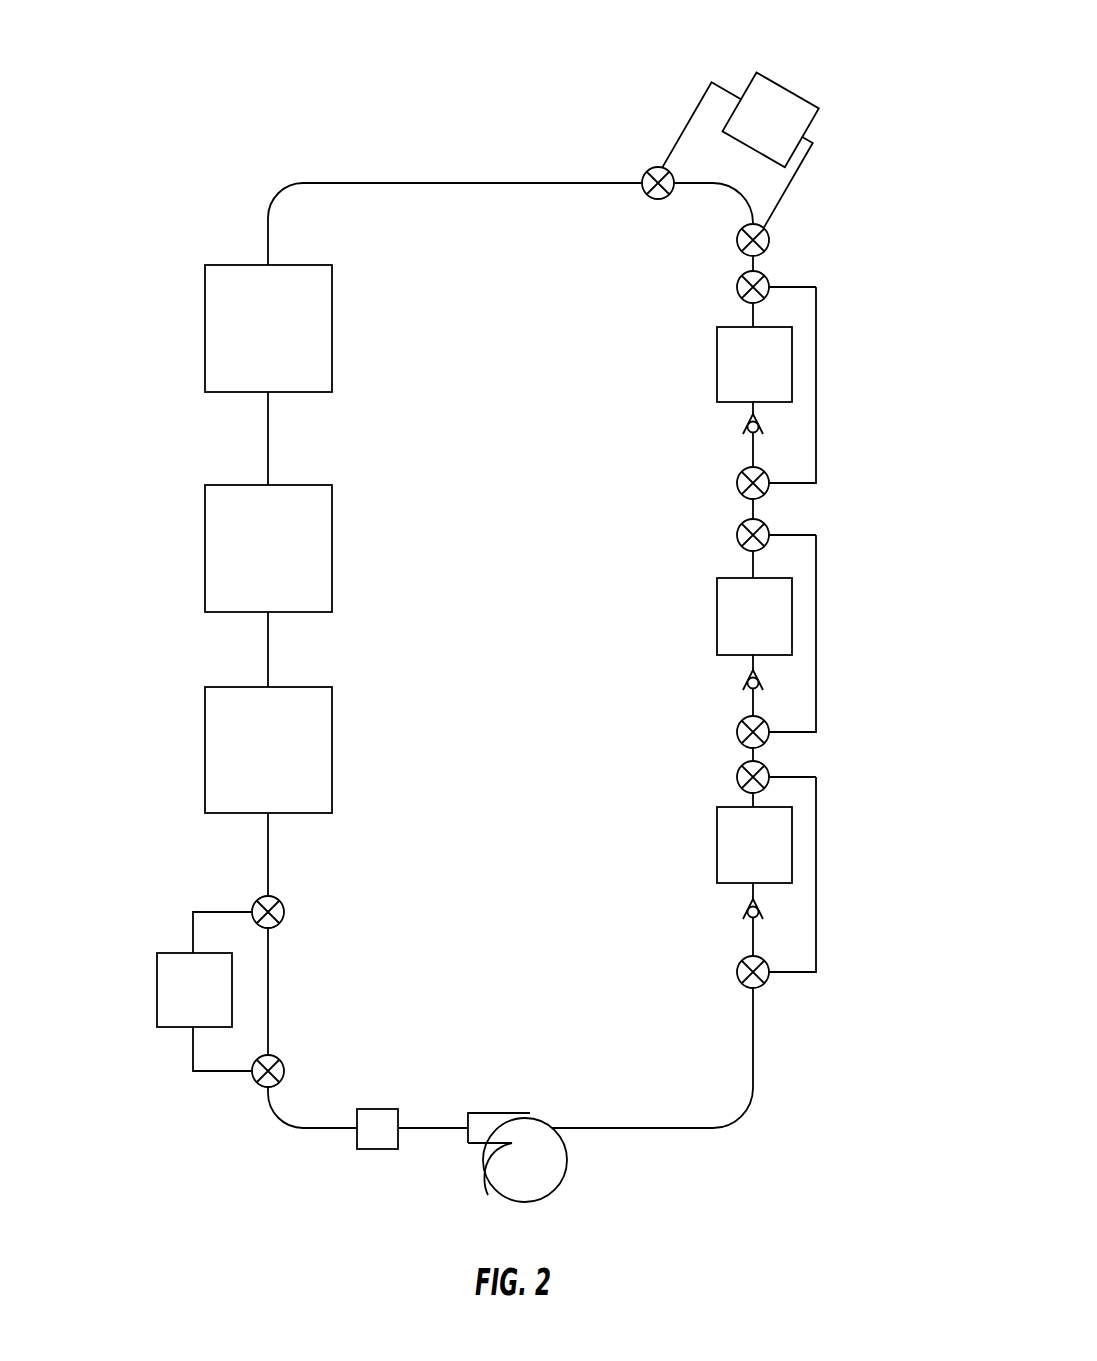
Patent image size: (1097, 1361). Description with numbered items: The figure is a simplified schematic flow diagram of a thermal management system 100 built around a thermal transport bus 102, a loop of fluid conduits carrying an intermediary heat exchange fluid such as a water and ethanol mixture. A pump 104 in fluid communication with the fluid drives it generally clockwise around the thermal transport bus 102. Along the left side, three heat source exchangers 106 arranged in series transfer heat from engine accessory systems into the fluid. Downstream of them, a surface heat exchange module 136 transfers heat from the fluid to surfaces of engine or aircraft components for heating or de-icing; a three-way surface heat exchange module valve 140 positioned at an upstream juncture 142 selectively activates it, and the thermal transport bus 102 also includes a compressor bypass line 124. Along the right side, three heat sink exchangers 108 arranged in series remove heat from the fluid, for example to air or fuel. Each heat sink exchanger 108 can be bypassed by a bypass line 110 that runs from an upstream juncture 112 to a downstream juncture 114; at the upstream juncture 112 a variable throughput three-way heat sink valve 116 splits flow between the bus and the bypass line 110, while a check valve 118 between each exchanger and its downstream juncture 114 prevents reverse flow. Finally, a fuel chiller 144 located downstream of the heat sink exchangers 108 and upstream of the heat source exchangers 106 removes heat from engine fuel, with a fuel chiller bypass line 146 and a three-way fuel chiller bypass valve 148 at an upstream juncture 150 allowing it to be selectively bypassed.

The thermal management system 100 is at (157, 104).
The thermal transport bus 102 is at (304, 182).
The pump 104 is at (528, 1113).
The heat source exchanger 106 is at (205, 330).
The heat sink exchanger 108 is at (722, 378).
The bypass line 110 is at (817, 377).
The upstream juncture 112 is at (778, 278).
The downstream juncture 114 is at (784, 488).
The three-way heat sink valve 116 is at (737, 285).
The check valve 118 is at (739, 428).
The compressor bypass line 124 is at (712, 184).
The surface heat exchange module 136 is at (793, 91).
The three-way surface heat exchange module valve 140 is at (655, 167).
The upstream juncture 142 is at (628, 192).
The fuel chiller 144 is at (157, 1000).
The fuel chiller bypass line 146 is at (269, 988).
The three-way fuel chiller bypass valve 148 is at (284, 1062).
The upstream juncture 150 is at (247, 1097).